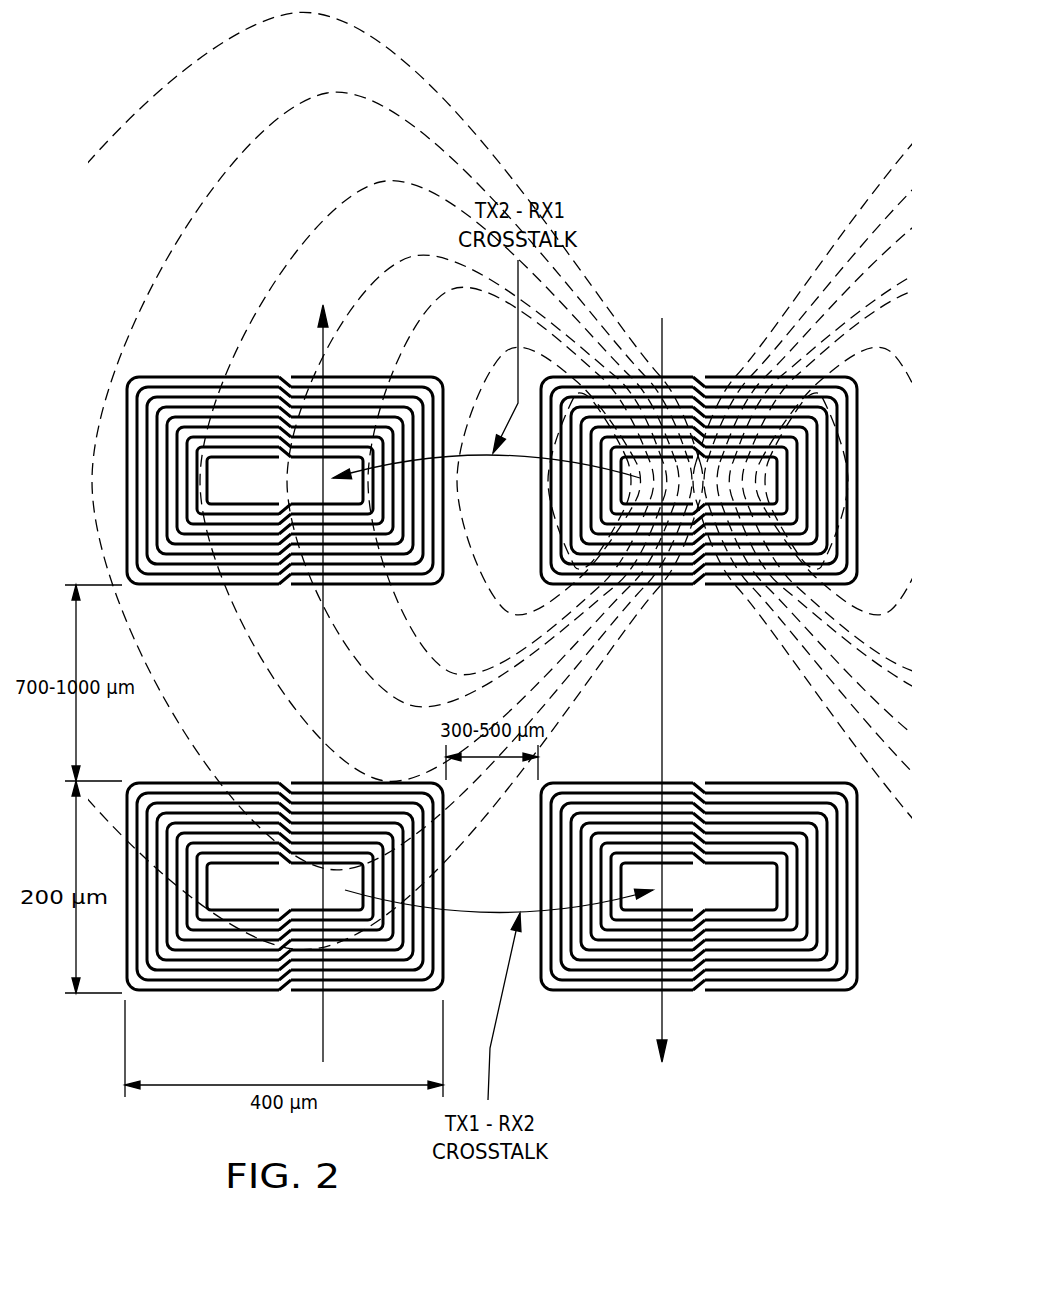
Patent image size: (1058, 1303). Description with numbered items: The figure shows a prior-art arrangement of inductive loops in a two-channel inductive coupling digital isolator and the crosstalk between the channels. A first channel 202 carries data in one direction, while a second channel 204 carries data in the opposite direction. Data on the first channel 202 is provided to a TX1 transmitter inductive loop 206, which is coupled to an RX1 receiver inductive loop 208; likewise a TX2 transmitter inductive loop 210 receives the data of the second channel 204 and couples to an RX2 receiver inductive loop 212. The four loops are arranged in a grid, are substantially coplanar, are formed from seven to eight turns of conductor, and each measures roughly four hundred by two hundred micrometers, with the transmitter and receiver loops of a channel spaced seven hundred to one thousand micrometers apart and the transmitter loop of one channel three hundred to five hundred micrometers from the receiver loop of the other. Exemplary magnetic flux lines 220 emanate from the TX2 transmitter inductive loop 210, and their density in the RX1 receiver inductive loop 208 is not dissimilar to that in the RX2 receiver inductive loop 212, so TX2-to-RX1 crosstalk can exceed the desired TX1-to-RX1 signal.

The magnetic flux lines 220 is at (516, 100).
The RX1 receiver inductive loop 208 is at (123, 480).
The TX2 transmitter inductive loop 210 is at (862, 480).
The TX1 transmitter inductive loop 206 is at (180, 993).
The RX2 receiver inductive loop 212 is at (803, 993).
The first channel 202 is at (323, 1008).
The second channel 204 is at (662, 1010).